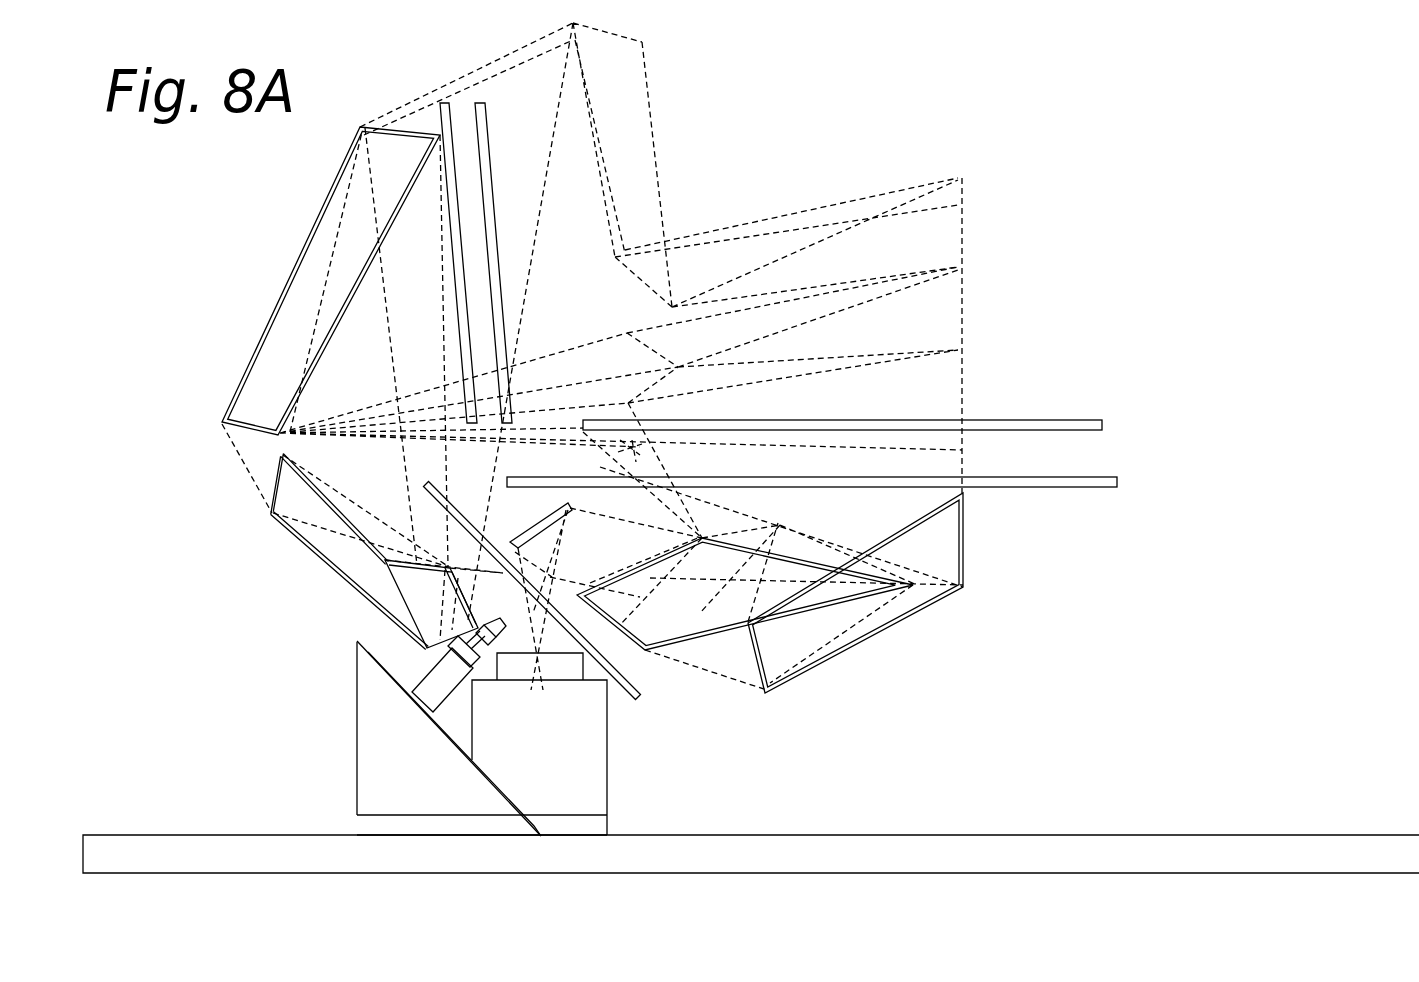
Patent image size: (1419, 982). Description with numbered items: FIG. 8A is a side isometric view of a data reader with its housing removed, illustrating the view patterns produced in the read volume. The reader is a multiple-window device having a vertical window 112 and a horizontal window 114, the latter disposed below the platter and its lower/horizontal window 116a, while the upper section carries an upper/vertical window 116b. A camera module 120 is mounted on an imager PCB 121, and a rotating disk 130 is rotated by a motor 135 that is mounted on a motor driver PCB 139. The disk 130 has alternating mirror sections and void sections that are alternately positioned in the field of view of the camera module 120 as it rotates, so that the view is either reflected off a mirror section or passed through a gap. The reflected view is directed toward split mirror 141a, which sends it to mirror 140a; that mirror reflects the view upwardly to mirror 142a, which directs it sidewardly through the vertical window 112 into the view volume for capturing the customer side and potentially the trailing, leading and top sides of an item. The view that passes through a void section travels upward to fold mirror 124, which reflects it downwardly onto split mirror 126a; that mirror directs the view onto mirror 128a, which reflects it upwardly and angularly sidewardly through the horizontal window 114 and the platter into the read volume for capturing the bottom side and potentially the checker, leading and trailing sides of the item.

The vertical window 112 is at (449, 111).
The upper/vertical window 116b is at (488, 127).
The lower/horizontal window 116a is at (1033, 420).
The horizontal window 114 is at (1053, 487).
The mirror 142a is at (310, 283).
The mirror 140a is at (348, 558).
The split mirror 141a is at (417, 582).
The fold mirror 124 is at (522, 536).
The rotating disk 130 is at (637, 671).
The split mirror 126a is at (690, 623).
The mirror 128a is at (942, 540).
The motor 135 is at (396, 722).
The camera module 120 is at (582, 767).
The motor driver PCB 139 is at (458, 825).
The imager PCB 121 is at (582, 825).